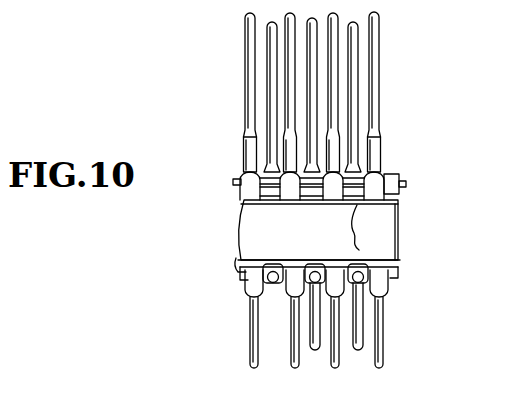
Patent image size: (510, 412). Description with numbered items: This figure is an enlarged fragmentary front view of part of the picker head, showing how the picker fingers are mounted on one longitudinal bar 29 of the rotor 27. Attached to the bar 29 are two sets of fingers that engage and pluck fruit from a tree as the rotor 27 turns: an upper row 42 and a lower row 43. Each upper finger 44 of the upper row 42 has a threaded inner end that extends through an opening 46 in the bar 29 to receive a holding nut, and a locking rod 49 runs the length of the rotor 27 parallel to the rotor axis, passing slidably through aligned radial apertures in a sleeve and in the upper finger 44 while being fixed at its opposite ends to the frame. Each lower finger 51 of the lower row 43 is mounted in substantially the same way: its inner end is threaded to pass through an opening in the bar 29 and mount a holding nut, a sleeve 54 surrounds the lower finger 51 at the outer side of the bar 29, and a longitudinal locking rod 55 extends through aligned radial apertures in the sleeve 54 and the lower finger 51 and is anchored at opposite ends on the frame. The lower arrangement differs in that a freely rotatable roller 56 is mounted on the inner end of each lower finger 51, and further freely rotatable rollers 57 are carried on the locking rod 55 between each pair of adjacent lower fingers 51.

The rotor 27 is at (398, 216).
The bar 29 is at (366, 228).
The upper row 42 is at (356, 62).
The lower row 43 is at (378, 120).
The upper finger 44 is at (317, 100).
The opening 46 is at (378, 258).
The locking rod 49 is at (242, 260).
The lower finger 51 is at (287, 97).
The sleeve 54 is at (292, 196).
The locking rod 55 is at (404, 182).
The roller 56 is at (246, 143).
The rollers 57 is at (269, 196).